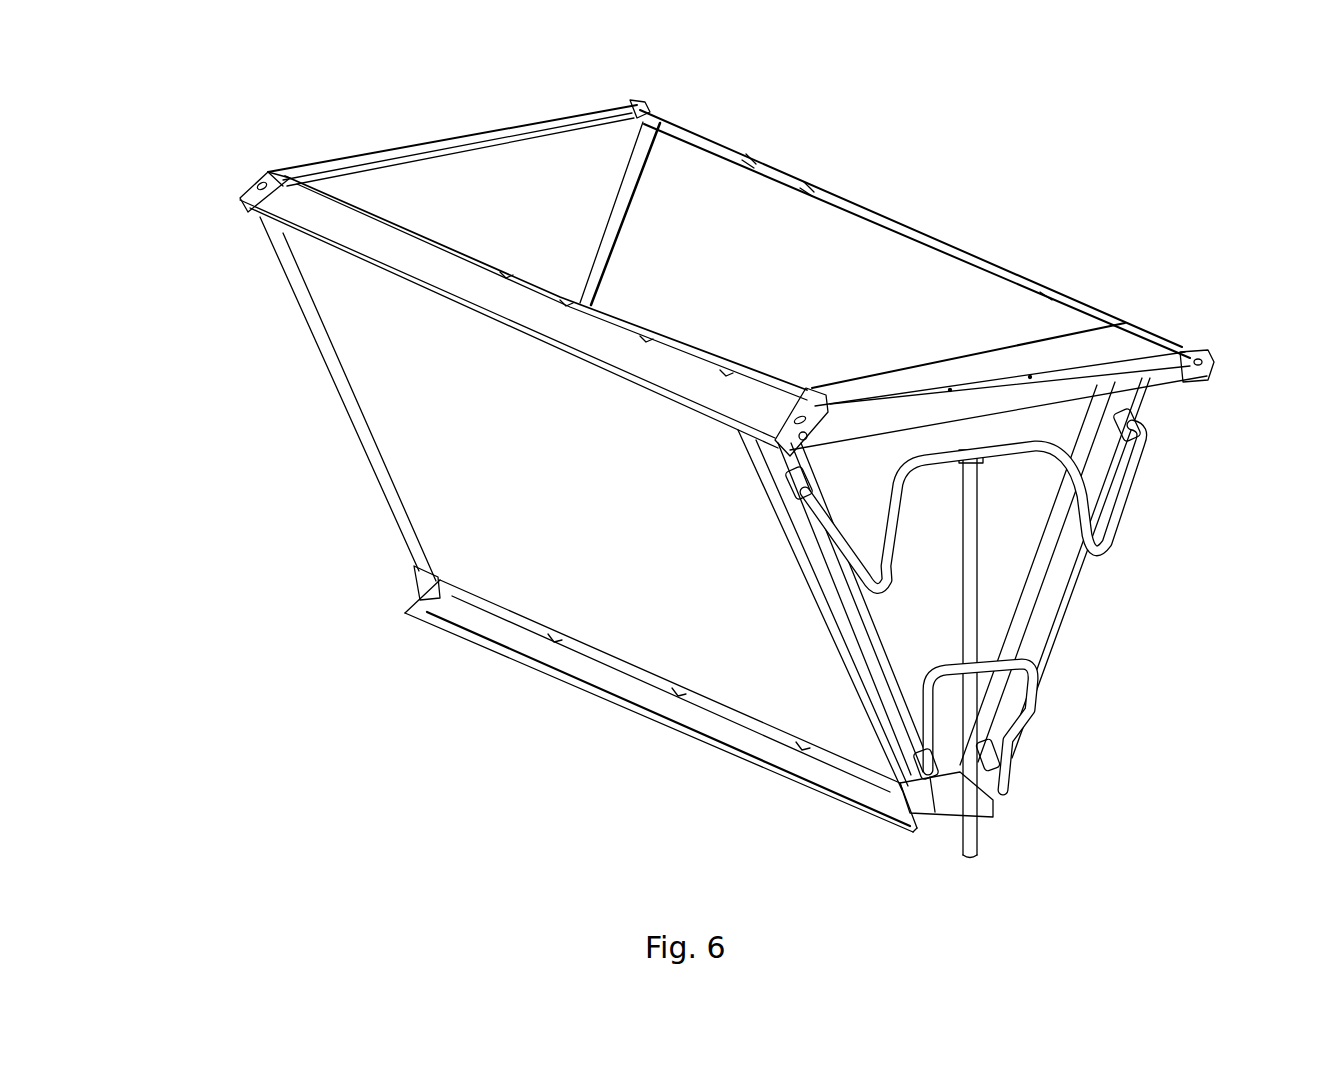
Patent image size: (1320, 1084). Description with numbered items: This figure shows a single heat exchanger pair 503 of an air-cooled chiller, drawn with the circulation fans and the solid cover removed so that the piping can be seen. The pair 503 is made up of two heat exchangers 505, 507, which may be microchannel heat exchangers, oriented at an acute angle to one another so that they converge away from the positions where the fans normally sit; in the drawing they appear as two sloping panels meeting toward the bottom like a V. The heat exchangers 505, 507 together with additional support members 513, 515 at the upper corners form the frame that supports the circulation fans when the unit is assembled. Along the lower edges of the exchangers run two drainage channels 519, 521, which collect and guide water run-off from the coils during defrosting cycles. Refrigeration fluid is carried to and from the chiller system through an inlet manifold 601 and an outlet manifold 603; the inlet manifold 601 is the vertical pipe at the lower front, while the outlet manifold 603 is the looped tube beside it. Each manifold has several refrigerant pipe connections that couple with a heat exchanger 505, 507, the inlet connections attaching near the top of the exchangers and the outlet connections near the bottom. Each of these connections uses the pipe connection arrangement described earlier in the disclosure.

The heat exchanger pair 503 is at (406, 128).
The heat exchanger 505 is at (371, 476).
The heat exchanger 507 is at (962, 230).
The support member 513 is at (238, 205).
The support member 515 is at (1148, 377).
The drainage channel 519 is at (812, 773).
The drainage channel 521 is at (956, 804).
The inlet manifold 601 is at (978, 840).
The outlet manifold 603 is at (1005, 782).